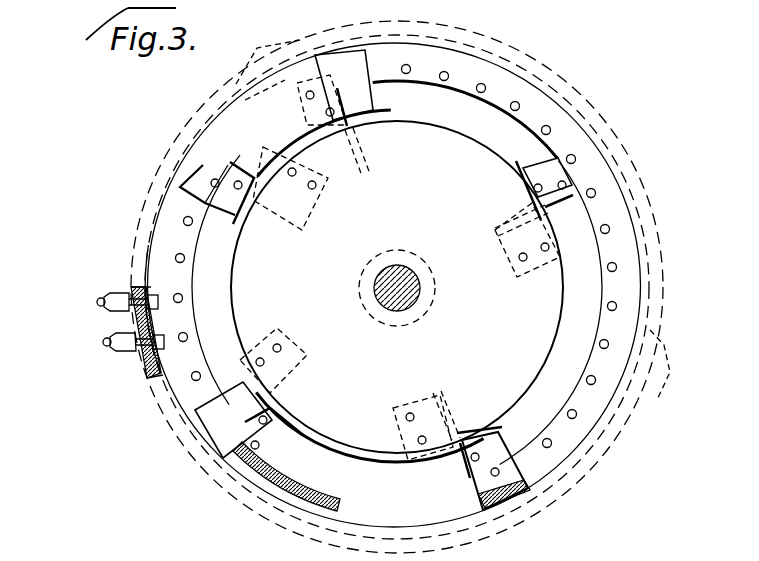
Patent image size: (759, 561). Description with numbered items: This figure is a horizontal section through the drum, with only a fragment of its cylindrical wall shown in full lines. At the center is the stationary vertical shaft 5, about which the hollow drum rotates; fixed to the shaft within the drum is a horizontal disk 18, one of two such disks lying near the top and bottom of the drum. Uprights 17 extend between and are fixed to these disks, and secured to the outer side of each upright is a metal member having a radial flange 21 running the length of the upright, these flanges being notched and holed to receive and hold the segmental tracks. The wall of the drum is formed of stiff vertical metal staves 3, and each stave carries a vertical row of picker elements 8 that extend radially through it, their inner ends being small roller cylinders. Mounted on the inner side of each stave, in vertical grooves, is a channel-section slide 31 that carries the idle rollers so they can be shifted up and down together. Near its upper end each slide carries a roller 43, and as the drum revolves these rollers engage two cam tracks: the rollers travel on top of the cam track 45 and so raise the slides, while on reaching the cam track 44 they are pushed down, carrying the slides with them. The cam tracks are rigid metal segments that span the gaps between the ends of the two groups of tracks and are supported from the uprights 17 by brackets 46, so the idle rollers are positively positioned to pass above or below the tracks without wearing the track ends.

The vertical metal stave 3 is at (300, 43).
The stationary vertical shaft 5 is at (401, 260).
The picker element 8 is at (102, 300).
The upright 17 is at (323, 232).
The horizontal disk 18 is at (397, 293).
The radial flange 21 is at (373, 97).
The slide 31 is at (136, 282).
The roller 43 is at (190, 335).
The cam track 44 is at (248, 106).
The cam track 45 is at (406, 290).
The bracket 46 is at (236, 170).